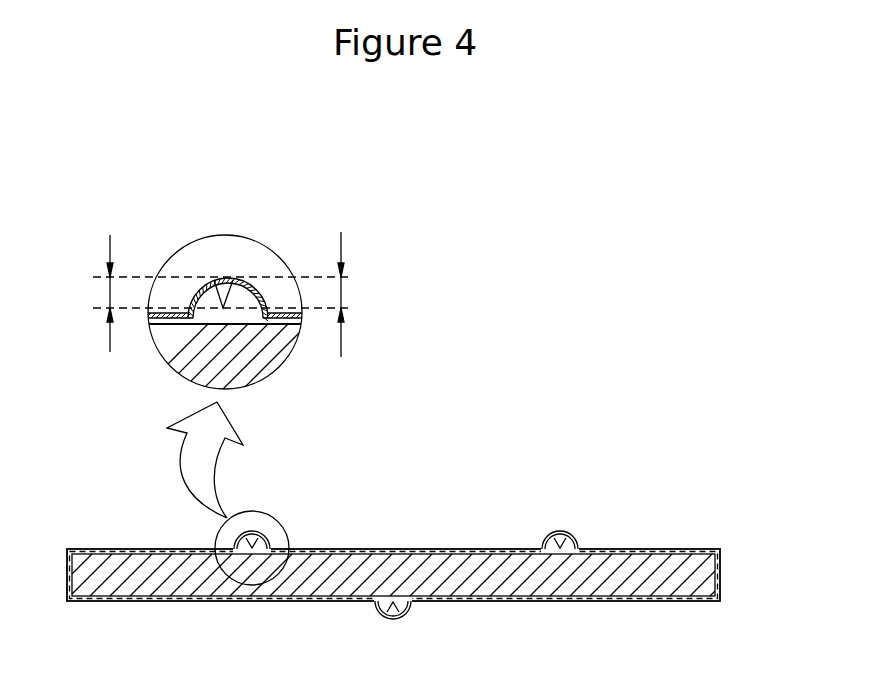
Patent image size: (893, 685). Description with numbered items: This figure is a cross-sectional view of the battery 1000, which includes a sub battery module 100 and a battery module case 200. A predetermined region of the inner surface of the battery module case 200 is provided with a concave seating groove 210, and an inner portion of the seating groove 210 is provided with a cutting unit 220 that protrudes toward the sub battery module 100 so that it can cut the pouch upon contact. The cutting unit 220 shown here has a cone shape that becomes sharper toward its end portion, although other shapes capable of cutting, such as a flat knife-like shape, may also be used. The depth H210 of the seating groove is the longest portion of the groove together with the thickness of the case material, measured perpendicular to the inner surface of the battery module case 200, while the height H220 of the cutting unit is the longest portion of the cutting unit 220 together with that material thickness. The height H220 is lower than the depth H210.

The battery 1000 is at (400, 427).
The sub battery module 100 is at (160, 333).
The battery module case 200 is at (394, 535).
The seating groove 210 is at (195, 290).
The cutting unit 220 is at (219, 278).
The height of the cutting unit H220 is at (202, 293).
The depth of the seating groove H210 is at (370, 294).